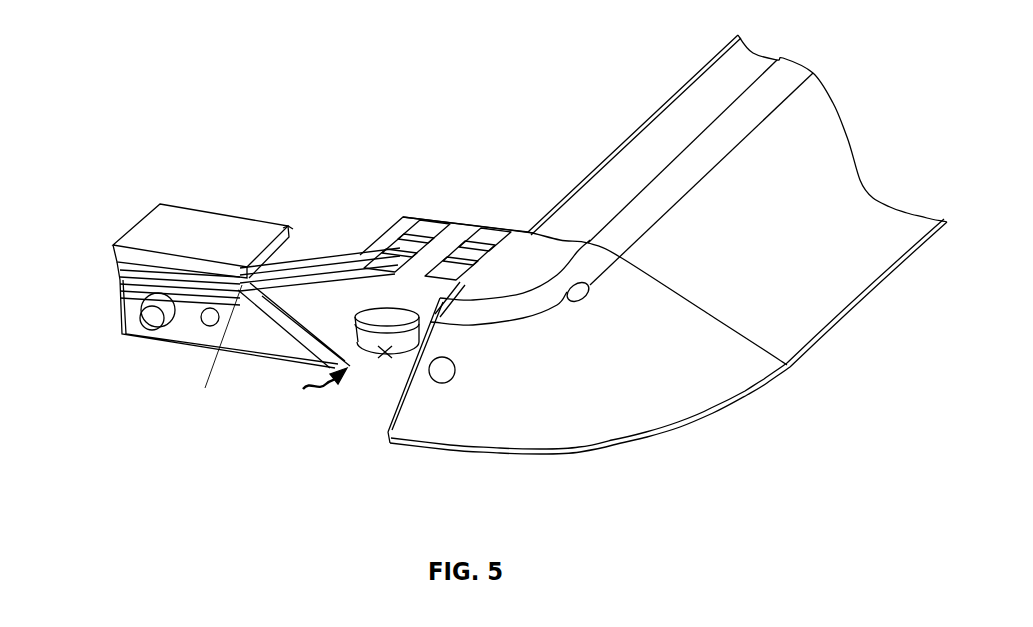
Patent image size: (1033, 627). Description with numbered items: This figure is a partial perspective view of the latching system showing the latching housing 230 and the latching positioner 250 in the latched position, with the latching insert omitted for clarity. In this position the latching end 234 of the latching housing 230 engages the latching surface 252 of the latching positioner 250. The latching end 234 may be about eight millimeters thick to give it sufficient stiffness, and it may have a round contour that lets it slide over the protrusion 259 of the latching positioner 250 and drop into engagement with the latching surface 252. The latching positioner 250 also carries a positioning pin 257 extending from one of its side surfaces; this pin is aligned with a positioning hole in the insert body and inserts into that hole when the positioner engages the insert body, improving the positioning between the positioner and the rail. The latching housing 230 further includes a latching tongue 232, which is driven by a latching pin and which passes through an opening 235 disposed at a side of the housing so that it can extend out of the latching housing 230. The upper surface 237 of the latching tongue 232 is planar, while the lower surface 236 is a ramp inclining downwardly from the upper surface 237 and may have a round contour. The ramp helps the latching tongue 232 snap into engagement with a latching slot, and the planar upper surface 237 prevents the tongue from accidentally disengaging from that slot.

The latching housing 230 is at (554, 432).
The latching tongue 232 is at (304, 384).
The latching end 234 is at (210, 346).
The opening 235 is at (405, 313).
The lower surface 236 is at (385, 348).
The upper surface 237 is at (368, 323).
The latching positioner 250 is at (177, 227).
The latching surface 252 is at (242, 283).
The positioning pin 257 is at (120, 292).
The protrusion 259 is at (285, 232).